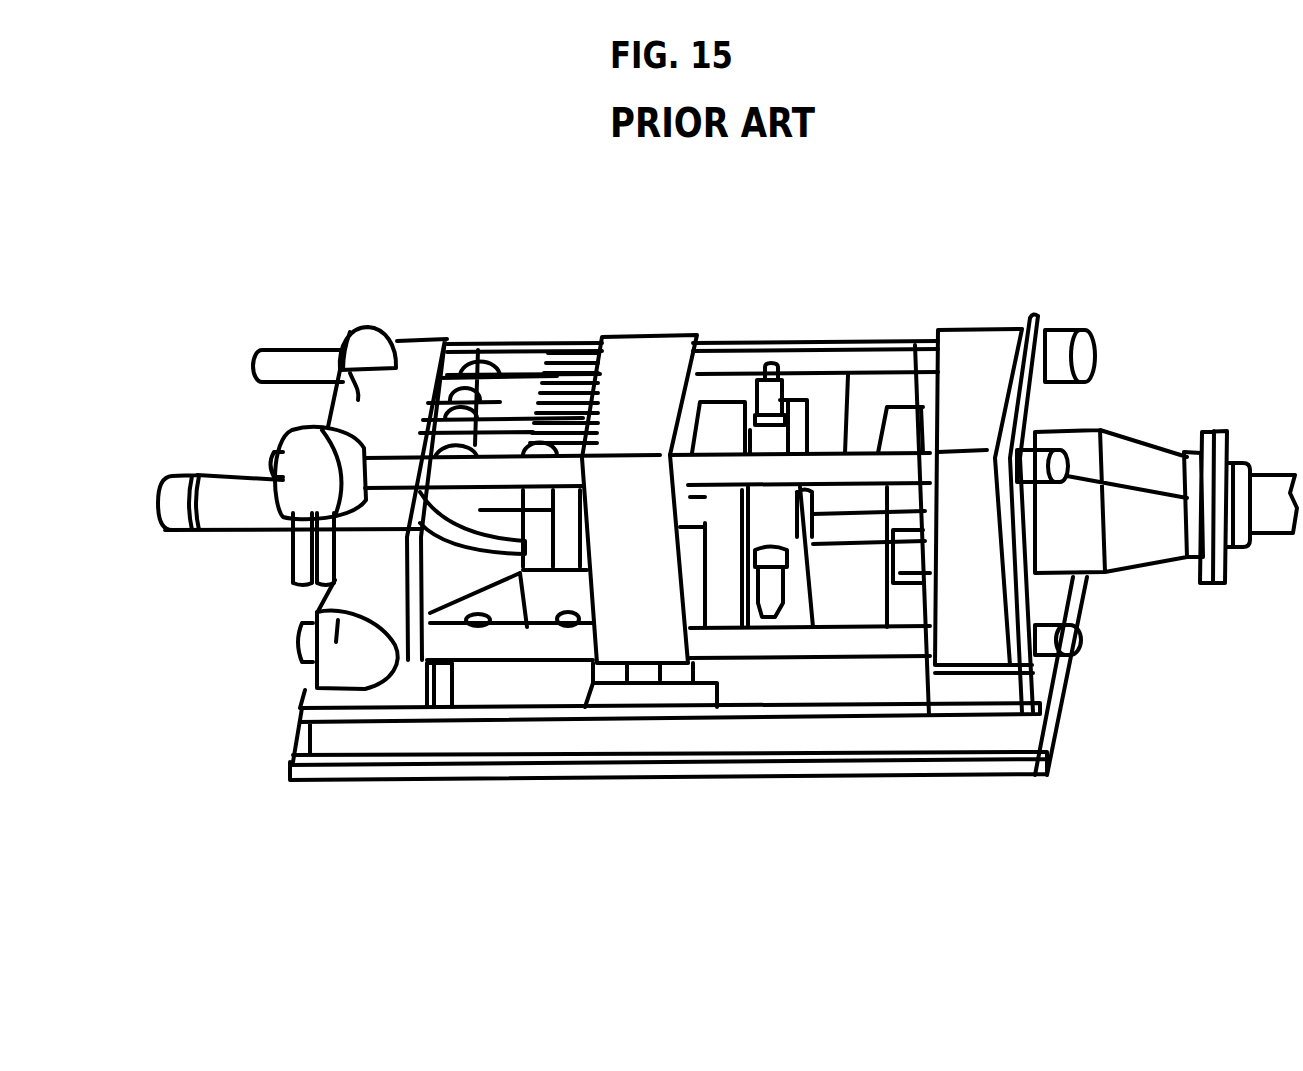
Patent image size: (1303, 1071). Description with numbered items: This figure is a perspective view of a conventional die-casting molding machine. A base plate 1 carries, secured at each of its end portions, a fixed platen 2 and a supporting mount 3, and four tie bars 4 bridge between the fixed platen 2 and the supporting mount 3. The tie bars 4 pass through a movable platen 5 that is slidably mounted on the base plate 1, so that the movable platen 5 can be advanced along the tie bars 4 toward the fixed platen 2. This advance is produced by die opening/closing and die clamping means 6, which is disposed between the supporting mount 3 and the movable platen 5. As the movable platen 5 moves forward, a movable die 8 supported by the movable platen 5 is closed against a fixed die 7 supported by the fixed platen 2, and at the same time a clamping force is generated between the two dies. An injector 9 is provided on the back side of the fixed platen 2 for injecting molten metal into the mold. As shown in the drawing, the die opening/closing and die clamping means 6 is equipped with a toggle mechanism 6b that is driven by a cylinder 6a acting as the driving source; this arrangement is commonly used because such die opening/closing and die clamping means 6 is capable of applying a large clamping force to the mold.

The base plate 1 is at (440, 783).
The fixed platen 2 is at (982, 347).
The supporting mount 3 is at (342, 370).
The tie bars 4 is at (863, 365).
The movable platen 5 is at (646, 376).
The die opening/closing and die clamping means 6 is at (517, 377).
The cylinder 6a is at (228, 517).
The toggle mechanism 6b is at (478, 347).
The fixed die 7 is at (900, 400).
The movable die 8 is at (731, 398).
The injector 9 is at (1088, 428).